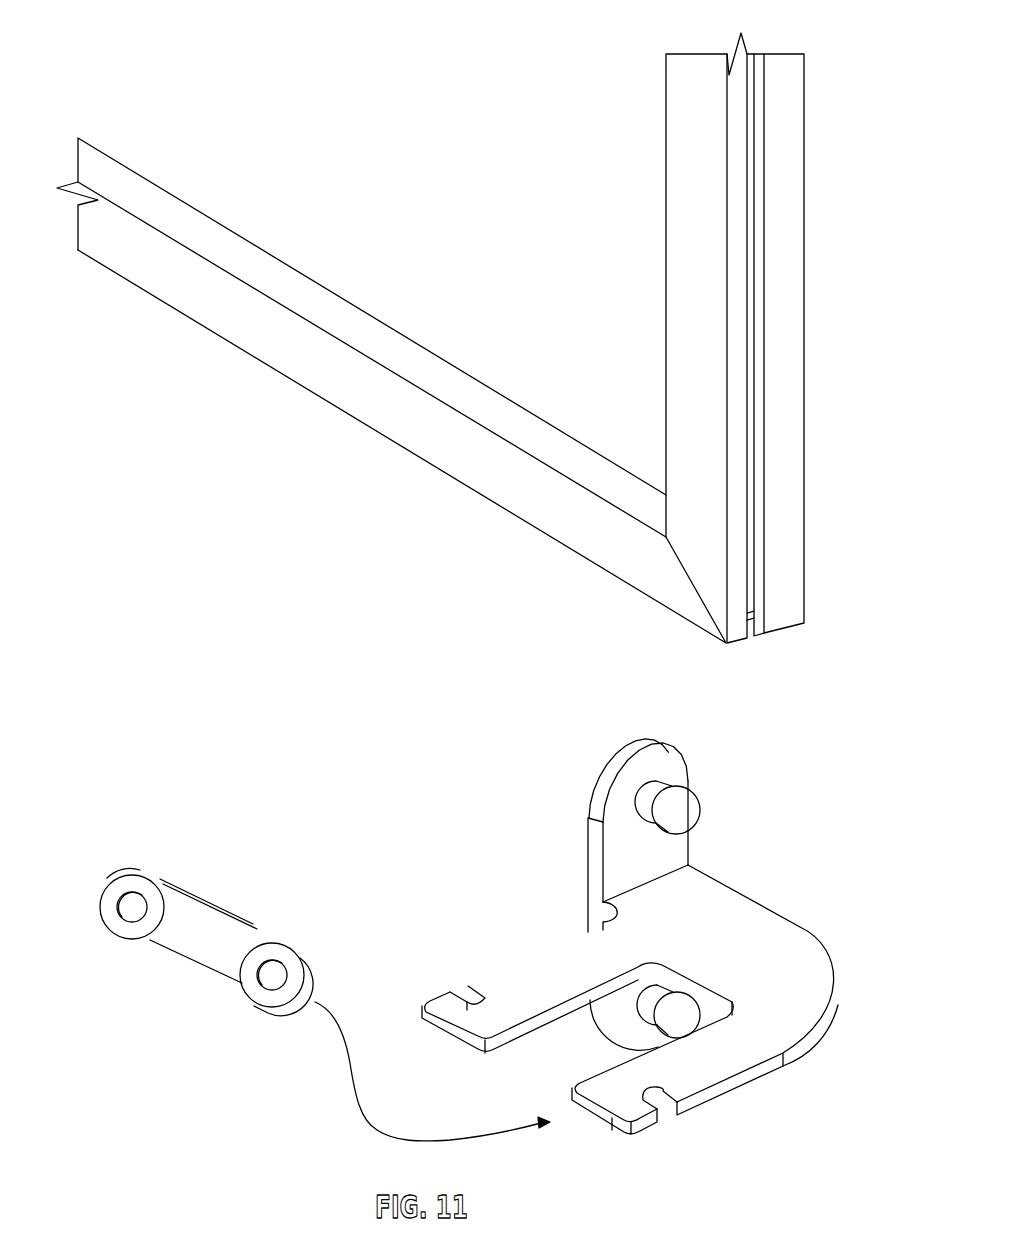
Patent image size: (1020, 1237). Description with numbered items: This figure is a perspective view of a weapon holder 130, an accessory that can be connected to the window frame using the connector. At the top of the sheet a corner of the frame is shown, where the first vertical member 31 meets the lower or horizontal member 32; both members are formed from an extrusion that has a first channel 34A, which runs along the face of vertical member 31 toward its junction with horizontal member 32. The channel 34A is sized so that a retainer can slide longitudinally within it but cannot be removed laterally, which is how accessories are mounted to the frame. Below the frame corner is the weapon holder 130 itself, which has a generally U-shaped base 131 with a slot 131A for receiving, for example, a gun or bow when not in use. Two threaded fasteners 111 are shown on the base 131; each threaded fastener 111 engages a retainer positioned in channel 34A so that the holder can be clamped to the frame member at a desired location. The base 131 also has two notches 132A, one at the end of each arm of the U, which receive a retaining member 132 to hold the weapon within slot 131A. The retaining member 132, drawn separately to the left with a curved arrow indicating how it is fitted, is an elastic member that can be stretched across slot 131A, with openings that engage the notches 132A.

The first vertical member 31 is at (810, 223).
The horizontal member 32 is at (415, 482).
The first channel 34A is at (753, 543).
The threaded fastener 111 is at (680, 810).
The weapon holder 130 is at (655, 946).
The base 131 is at (785, 937).
The slot 131A is at (525, 1072).
The retaining member 132 is at (207, 953).
The notches 132A is at (458, 997).